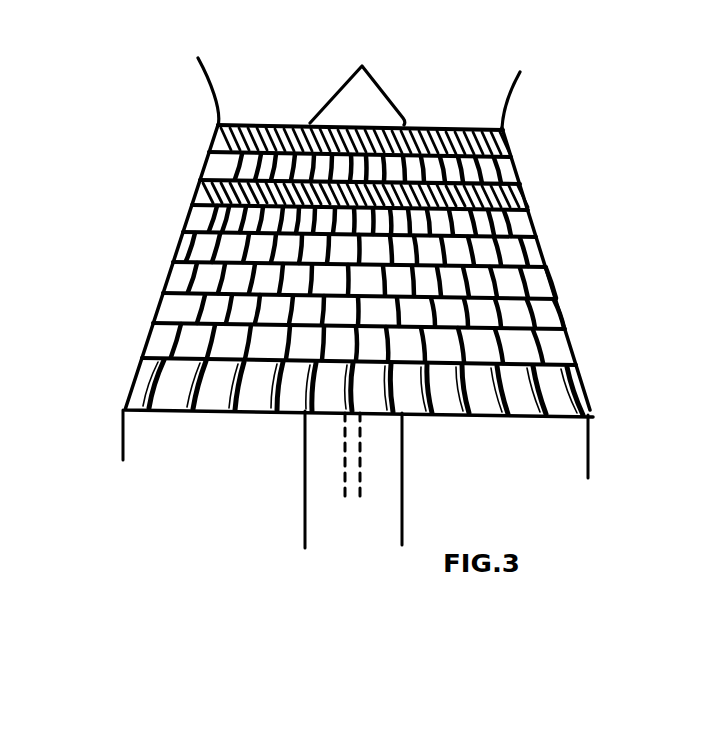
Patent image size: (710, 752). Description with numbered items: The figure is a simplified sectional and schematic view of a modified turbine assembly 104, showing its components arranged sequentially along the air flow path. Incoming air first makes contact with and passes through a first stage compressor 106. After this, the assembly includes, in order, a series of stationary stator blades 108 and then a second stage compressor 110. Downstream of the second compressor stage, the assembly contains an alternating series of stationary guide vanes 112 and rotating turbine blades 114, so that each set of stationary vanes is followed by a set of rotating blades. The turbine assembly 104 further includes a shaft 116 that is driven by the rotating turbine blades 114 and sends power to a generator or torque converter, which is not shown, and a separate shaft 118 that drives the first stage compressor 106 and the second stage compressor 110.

The turbine assembly 104 is at (538, 130).
The first stage compressor 106 is at (214, 126).
The stationary stator blades 108 is at (149, 296).
The second stage compressor 110 is at (527, 196).
The stationary guide vanes 112 is at (184, 232).
The rotating turbine blades 114 is at (593, 395).
The shaft 116 is at (362, 463).
The shaft 118 is at (403, 450).